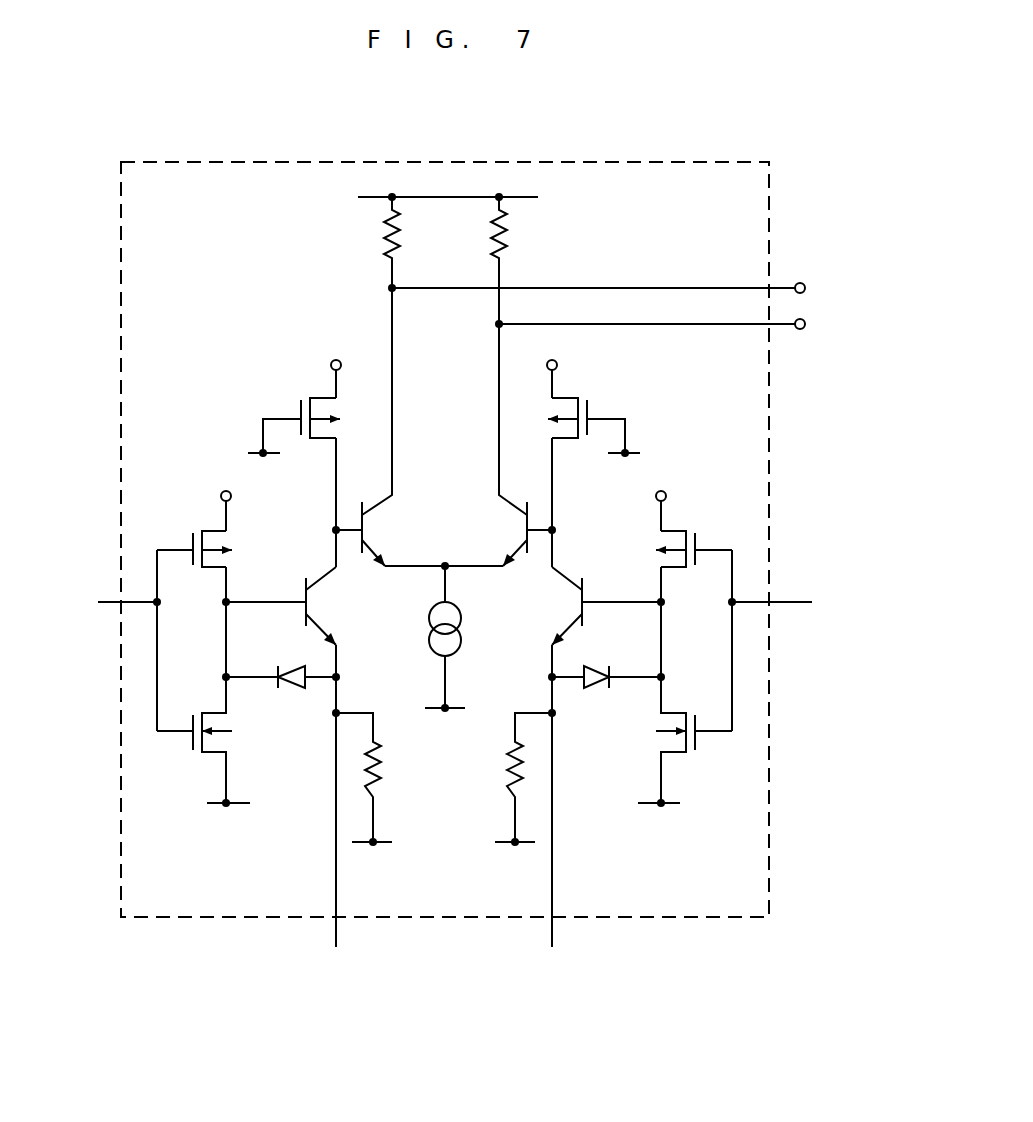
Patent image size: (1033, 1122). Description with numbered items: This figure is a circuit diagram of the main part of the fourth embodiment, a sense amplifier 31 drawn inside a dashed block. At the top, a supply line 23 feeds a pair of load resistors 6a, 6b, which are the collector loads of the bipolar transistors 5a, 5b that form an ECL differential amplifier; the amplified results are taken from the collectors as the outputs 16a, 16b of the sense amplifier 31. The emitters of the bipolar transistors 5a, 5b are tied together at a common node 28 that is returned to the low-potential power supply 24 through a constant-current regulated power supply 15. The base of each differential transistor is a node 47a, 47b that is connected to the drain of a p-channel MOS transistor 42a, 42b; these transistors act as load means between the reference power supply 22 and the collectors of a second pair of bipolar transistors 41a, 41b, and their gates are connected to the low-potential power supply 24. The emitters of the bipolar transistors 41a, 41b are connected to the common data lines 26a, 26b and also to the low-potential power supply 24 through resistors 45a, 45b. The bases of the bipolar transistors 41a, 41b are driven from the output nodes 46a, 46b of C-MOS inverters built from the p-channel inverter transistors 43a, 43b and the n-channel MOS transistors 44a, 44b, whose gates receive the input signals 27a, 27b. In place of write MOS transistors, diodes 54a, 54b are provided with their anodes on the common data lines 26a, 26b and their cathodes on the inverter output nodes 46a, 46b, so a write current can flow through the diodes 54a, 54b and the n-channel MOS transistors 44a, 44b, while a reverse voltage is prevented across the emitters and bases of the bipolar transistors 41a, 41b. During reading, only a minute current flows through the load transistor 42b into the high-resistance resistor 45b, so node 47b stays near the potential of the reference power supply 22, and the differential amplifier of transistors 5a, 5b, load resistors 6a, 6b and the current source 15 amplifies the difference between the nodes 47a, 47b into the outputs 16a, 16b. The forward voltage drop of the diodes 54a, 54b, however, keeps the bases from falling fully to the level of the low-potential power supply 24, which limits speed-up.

The sense amplifier 31 is at (770, 237).
The power supply line 23 is at (448, 184).
The load resistor 6a is at (413, 242).
The load resistor 6b is at (526, 260).
The output 16a is at (624, 290).
The output 16b is at (678, 326).
The VRS power supply 22 is at (433, 429).
The VEE power supply 24 is at (436, 654).
The p-channel MOS transistor 42a is at (300, 405).
The p-channel MOS transistor 42b is at (590, 405).
The node 47a is at (335, 530).
The node 47b is at (553, 530).
The bipolar transistor 5a is at (375, 427).
The bipolar transistor 5b is at (517, 445).
The common emitter node 28 is at (444, 582).
The constant-current regulated power supply 15 is at (462, 655).
The inverter gate 43a is at (232, 543).
The inverter gate 43b is at (655, 543).
The input terminal 27a is at (96, 640).
The input terminal 27b is at (801, 640).
The bipolar transistor 41a is at (297, 622).
The bipolar transistor 41b is at (586, 622).
The output node of C-MOS inverter 46a is at (246, 606).
The output node of C-MOS inverter 46b is at (641, 606).
The diode 54a is at (281, 697).
The diode 54b is at (606, 697).
The n-channel MOS transistor 44a is at (228, 740).
The n-channel MOS transistor 44b is at (655, 740).
The resistor 45a is at (379, 775).
The high-resistance resistor 45b is at (507, 775).
The common data line 26a is at (344, 827).
The common data line 26b is at (561, 827).